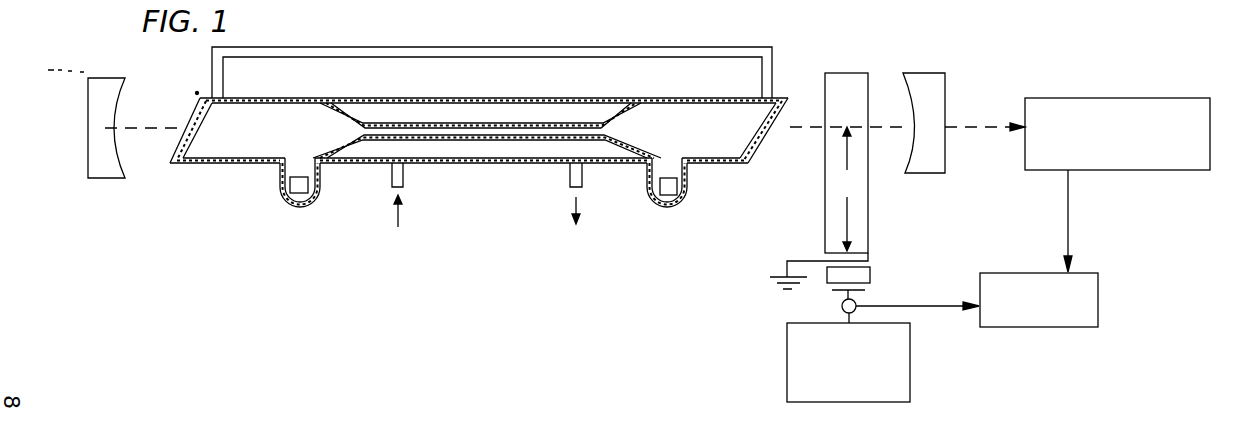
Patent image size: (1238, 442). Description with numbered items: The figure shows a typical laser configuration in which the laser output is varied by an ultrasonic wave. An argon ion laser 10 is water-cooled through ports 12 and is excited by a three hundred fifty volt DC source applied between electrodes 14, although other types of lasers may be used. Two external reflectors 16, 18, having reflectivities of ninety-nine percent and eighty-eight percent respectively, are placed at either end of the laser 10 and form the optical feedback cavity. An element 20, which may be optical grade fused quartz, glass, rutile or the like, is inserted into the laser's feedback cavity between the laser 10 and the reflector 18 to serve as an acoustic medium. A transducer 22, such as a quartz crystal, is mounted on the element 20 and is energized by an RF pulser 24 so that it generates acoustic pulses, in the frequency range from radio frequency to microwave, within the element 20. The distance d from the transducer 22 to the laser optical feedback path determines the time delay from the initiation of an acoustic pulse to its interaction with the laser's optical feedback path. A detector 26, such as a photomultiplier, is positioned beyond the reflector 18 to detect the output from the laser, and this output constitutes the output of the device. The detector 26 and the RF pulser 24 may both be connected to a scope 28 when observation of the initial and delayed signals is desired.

The argon ion laser 10 is at (207, 167).
The ports 12 is at (403, 180).
The electrodes 14 is at (298, 195).
The external reflector 16 is at (118, 98).
The external reflector 18 is at (945, 93).
The element 20 is at (868, 218).
The transducer 22 is at (870, 275).
The RF pulser 24 is at (910, 390).
The detector 26 is at (1180, 163).
The scope 28 is at (1098, 320).